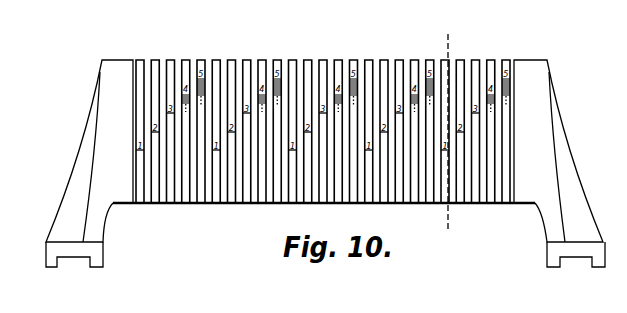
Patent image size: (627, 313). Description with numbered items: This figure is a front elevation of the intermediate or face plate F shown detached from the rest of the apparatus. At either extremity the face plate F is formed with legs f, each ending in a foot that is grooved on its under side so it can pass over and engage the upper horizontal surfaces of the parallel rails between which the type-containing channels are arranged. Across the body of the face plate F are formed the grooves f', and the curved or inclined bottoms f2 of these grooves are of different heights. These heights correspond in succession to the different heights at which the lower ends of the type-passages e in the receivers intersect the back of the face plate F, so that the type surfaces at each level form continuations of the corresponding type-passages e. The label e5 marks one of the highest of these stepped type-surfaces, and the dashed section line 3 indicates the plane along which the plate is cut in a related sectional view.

The legs f is at (325, 163).
The intermediate or face plate F is at (333, 54).
The grooves f' is at (339, 107).
The curved or inclined bottoms f2 is at (190, 61).
The type-passages e is at (159, 207).
The marked comb tooth e5 is at (349, 147).
The section line 3- 3 is at (449, 135).